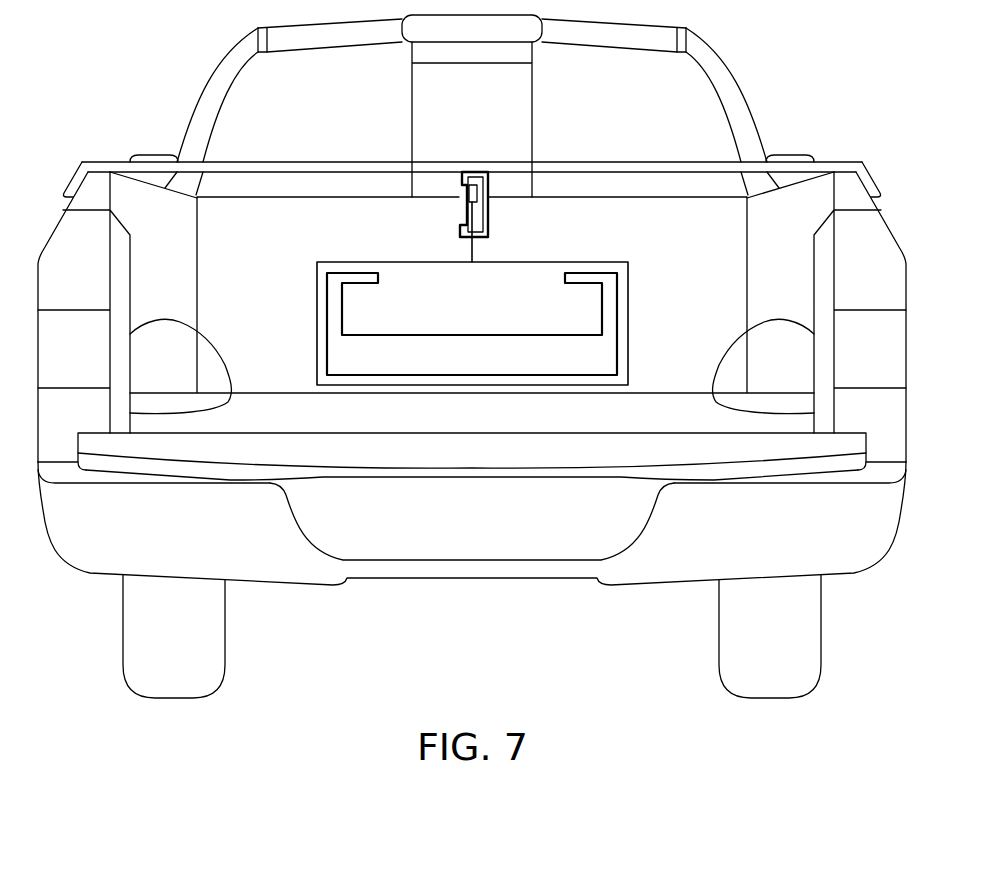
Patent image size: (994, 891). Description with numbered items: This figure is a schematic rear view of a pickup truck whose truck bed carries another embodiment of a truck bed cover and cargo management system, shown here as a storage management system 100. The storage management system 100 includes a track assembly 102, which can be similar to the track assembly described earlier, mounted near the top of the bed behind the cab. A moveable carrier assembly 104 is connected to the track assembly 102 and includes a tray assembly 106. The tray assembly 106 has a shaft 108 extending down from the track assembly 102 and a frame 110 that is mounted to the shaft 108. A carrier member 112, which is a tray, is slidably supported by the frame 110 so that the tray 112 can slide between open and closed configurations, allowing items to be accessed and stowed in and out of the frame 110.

The storage management system 100 is at (389, 179).
The track assembly 102 is at (501, 196).
The moveable carrier assembly 104 is at (642, 268).
The tray assembly 106 is at (639, 330).
The shaft 108 is at (474, 258).
The frame 110 is at (309, 287).
The carrier member 112 is at (498, 357).